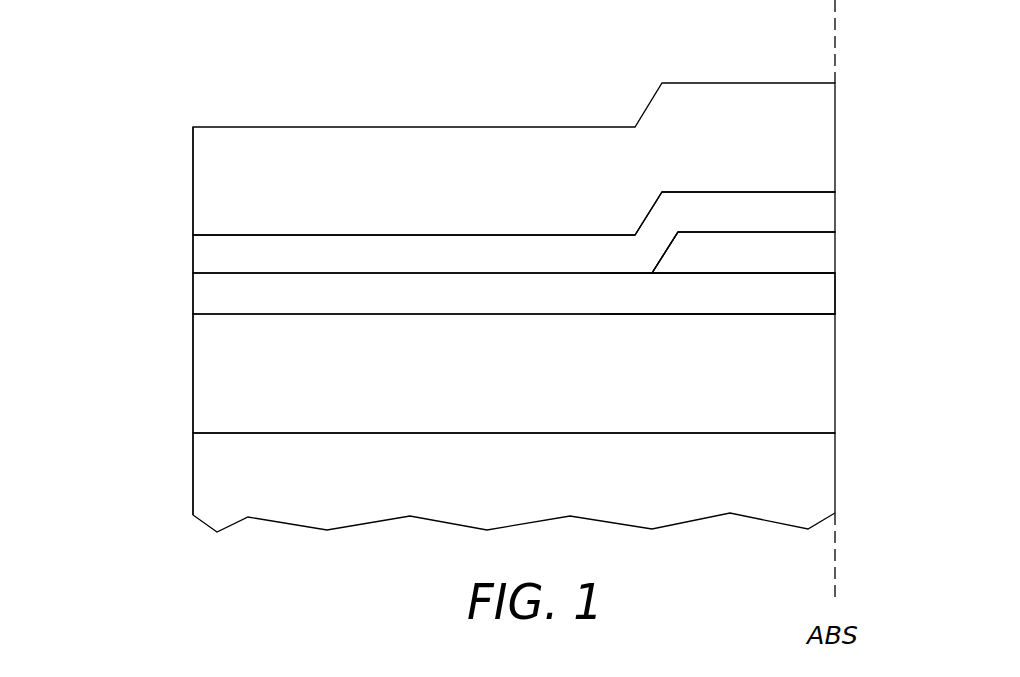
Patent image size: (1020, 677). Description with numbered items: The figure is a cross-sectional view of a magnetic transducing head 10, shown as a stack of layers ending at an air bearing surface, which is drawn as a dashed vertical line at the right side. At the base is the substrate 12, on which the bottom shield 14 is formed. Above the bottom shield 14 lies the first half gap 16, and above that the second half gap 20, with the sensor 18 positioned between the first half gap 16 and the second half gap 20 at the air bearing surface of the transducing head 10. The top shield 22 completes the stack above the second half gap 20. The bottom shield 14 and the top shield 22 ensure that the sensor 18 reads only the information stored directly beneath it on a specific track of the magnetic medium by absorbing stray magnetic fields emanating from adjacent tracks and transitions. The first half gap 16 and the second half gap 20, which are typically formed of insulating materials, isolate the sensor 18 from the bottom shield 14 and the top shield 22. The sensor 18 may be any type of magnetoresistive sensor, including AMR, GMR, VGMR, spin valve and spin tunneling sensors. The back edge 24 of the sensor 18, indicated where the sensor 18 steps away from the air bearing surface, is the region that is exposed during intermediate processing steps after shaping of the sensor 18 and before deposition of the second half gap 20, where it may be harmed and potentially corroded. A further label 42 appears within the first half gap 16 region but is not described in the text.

The magnetic transducing head 10 is at (147, 253).
The substrate 12 is at (823, 485).
The bottom shield 14 is at (824, 360).
The first half gap 16 is at (821, 308).
The sensor 18 is at (813, 258).
The second half gap 20 is at (814, 227).
The top shield 22 is at (811, 141).
The back edge 24 is at (668, 242).
The first half gap layer 42 is at (696, 308).